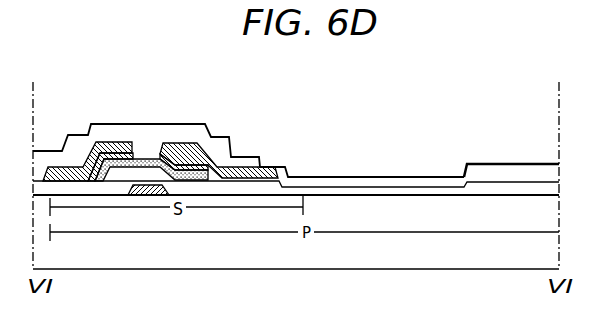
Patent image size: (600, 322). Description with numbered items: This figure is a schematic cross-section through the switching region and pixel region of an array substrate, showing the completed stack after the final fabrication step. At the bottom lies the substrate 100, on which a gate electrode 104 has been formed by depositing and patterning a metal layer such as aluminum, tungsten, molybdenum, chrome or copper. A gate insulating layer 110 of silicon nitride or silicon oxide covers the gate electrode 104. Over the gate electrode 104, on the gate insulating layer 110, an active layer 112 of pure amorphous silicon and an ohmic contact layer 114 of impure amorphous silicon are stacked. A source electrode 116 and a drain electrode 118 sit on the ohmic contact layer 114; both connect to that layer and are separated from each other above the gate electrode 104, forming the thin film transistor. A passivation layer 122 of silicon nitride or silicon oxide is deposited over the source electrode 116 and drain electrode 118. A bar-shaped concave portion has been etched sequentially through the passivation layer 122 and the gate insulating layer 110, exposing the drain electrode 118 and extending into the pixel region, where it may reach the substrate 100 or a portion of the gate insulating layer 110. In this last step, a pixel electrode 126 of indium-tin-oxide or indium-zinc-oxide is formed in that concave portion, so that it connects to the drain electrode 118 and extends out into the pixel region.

The substrate 100 is at (538, 264).
The gate electrode 104 is at (155, 184).
The gate insulating layer 110 is at (490, 186).
The active layer 112 is at (145, 159).
The ohmic contact layer 114 is at (90, 164).
The source electrode 116 is at (107, 142).
The drain electrode 118 is at (208, 148).
The passivation layer 122 is at (466, 155).
The pixel electrode 126 is at (373, 177).